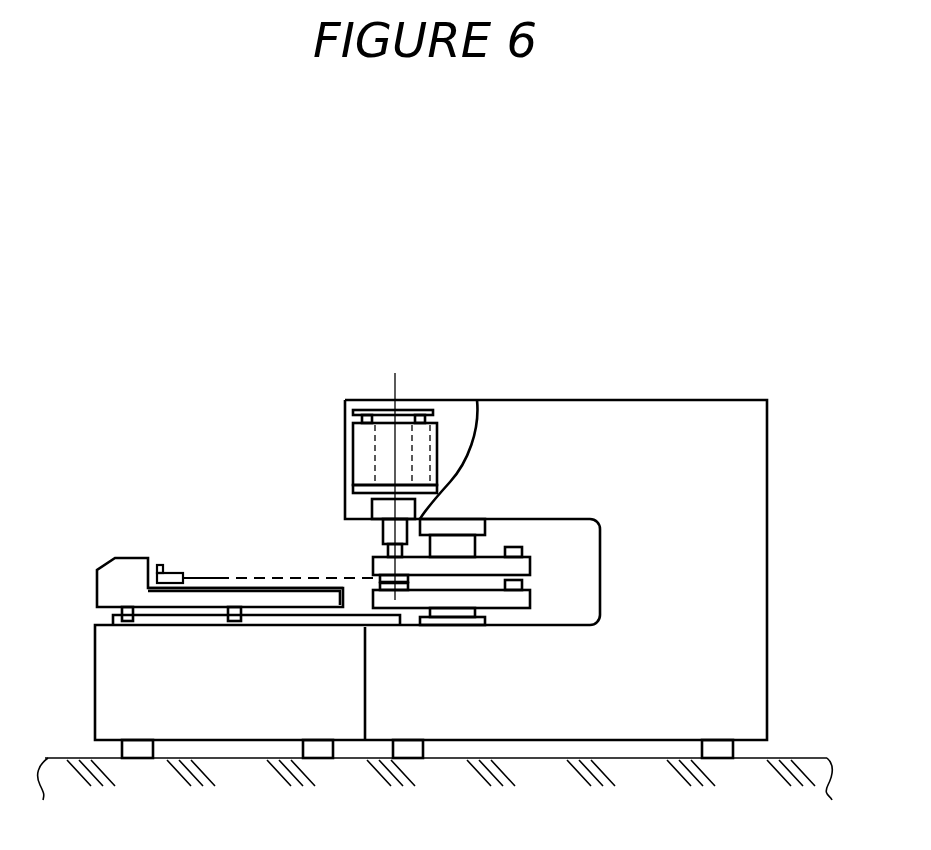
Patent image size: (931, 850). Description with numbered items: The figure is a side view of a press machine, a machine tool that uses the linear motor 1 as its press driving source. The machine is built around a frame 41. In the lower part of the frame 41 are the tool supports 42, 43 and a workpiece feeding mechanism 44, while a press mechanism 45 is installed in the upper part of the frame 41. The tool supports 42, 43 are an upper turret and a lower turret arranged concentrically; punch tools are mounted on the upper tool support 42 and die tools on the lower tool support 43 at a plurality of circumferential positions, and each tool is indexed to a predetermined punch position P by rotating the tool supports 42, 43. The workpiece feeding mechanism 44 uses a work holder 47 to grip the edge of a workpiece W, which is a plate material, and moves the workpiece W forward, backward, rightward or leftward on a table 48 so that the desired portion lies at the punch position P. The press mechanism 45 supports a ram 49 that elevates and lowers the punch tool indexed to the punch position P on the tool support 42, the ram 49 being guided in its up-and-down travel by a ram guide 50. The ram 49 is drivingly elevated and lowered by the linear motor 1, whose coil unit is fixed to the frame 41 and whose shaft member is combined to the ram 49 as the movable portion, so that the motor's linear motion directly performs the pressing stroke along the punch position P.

The linear motor 1 is at (383, 448).
The frame 41 is at (750, 594).
The tool support 42 is at (380, 566).
The tool support 43 is at (380, 587).
The workpiece feeding mechanism 44 is at (98, 550).
The press mechanism 45 is at (445, 437).
The work holder 47 is at (173, 570).
The table 48 is at (217, 587).
The ram 49 is at (383, 535).
The ram guide 50 is at (380, 508).
The workpiece W is at (263, 578).
The punch position P is at (392, 388).